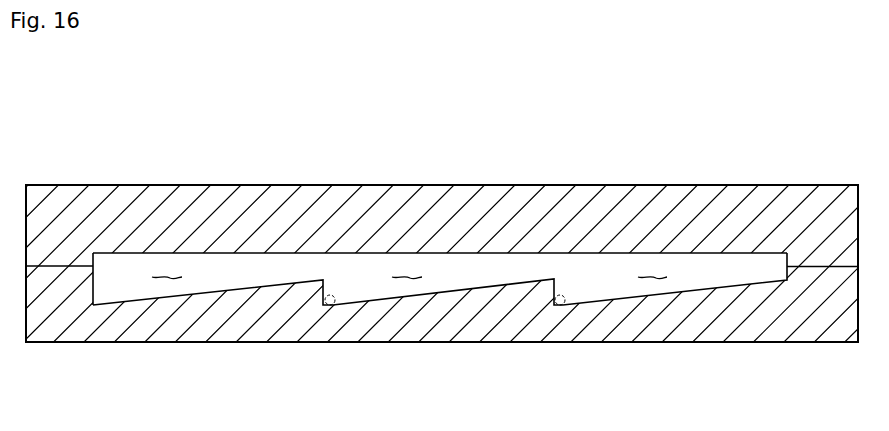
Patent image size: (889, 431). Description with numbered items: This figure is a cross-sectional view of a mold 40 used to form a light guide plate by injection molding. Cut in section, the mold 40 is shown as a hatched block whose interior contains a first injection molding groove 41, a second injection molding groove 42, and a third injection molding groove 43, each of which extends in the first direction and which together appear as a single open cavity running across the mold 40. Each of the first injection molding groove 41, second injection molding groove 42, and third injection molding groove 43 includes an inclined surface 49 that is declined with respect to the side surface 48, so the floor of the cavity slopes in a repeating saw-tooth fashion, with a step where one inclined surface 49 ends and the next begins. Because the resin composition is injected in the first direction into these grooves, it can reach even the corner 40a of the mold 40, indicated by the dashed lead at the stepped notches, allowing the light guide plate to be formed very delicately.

The mold 40 is at (744, 147).
The corner 40a is at (557, 302).
The first injection molding groove 41 is at (167, 277).
The second injection molding groove 42 is at (407, 277).
The third injection molding groove 43 is at (652, 277).
The side surface 48 is at (93, 288).
The inclined surface 49 is at (217, 291).